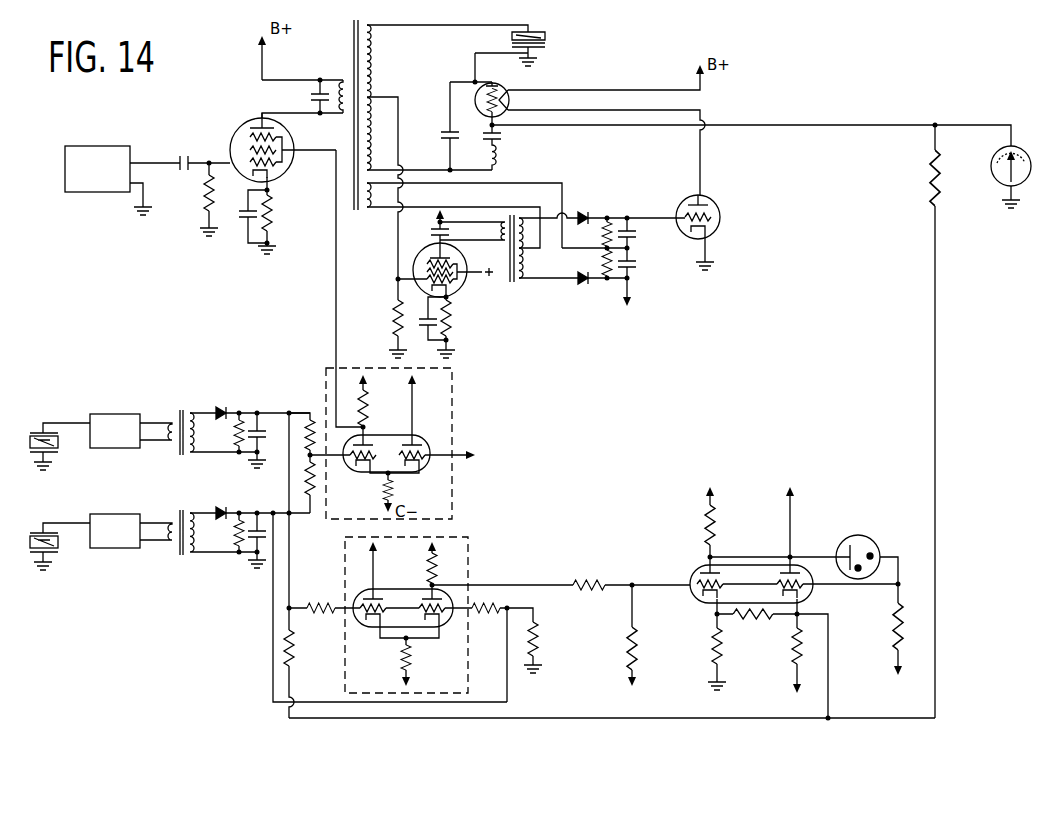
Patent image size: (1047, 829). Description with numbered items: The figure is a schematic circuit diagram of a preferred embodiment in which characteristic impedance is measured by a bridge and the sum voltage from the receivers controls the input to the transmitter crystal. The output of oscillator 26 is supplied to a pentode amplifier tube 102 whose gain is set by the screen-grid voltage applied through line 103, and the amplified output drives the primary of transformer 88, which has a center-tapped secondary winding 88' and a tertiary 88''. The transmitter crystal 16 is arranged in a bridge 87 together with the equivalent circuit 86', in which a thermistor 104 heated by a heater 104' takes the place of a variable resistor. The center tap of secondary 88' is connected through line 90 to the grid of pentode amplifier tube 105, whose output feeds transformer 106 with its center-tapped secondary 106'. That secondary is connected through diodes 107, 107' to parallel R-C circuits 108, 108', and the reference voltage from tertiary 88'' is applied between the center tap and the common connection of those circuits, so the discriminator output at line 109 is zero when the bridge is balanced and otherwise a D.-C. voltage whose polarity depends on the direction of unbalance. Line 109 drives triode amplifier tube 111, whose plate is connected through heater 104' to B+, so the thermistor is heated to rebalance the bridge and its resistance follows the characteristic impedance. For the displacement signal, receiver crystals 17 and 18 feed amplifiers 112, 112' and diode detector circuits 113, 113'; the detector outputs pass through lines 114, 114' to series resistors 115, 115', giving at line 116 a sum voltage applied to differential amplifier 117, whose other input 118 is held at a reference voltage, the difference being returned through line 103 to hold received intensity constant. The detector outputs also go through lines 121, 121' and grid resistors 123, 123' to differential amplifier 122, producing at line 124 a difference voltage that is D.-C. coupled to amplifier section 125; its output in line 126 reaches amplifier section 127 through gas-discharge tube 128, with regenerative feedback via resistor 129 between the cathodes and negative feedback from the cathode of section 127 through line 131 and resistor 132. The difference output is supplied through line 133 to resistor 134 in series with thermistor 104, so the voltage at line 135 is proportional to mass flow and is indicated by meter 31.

The oscillator 26 is at (110, 130).
The pentode amplifier tube 102 is at (237, 122).
The transformer 88 is at (356, 105).
The center-tapped secondary winding 88' is at (389, 97).
The tertiary 88'' is at (372, 210).
The bridge 87 is at (452, 61).
The equivalent circuit 86' is at (440, 126).
The line 90 is at (399, 135).
The transmitter crystal 16 is at (547, 43).
The thermistor 104 is at (512, 97).
The heater 104' is at (529, 100).
The amplifier tube 105 is at (415, 260).
The transformer 106 is at (484, 259).
The center-tapped secondary 106' is at (469, 242).
The diode 107 is at (573, 202).
The diode 107' is at (573, 288).
The parallel R-C circuit 108 is at (643, 233).
The parallel R-C circuit 108' is at (648, 282).
The line 109 is at (679, 209).
The amplifier tube 111 is at (718, 204).
The resistor 134 is at (928, 182).
The line 135 is at (979, 112).
The meter 31 is at (998, 158).
The line 133 is at (936, 504).
The line 103 is at (334, 300).
The receiver crystal 17 is at (31, 436).
The receiver crystal 18 is at (33, 534).
The amplifier 112 is at (115, 418).
The amplifier 112' is at (115, 518).
The diode detector circuit 113 is at (198, 432).
The diode detector circuit 113' is at (198, 532).
The line 114 is at (250, 428).
The line 114' is at (250, 528).
The series resistor 115 is at (309, 423).
The series resistor 115' is at (320, 496).
The line 116 is at (334, 463).
The differential amplifier 117 is at (452, 404).
The input 118 is at (444, 463).
The line 121 is at (311, 510).
The line 121' is at (371, 607).
The differential amplifier 122 is at (468, 563).
The series grid resistor 123 is at (324, 598).
The series grid resistor 123' is at (493, 644).
The line 124 is at (541, 584).
The amplifier section 125 is at (689, 573).
The line 126 is at (767, 545).
The amplifier section 127 is at (812, 588).
The gas-discharge tube 128 is at (873, 522).
The resistor 129 is at (737, 618).
The resistor 132 is at (297, 651).
The line 131 is at (595, 720).